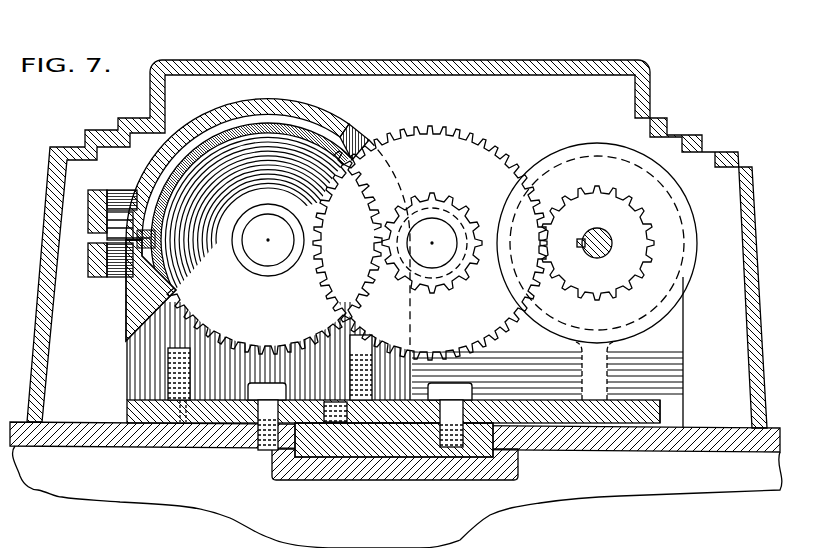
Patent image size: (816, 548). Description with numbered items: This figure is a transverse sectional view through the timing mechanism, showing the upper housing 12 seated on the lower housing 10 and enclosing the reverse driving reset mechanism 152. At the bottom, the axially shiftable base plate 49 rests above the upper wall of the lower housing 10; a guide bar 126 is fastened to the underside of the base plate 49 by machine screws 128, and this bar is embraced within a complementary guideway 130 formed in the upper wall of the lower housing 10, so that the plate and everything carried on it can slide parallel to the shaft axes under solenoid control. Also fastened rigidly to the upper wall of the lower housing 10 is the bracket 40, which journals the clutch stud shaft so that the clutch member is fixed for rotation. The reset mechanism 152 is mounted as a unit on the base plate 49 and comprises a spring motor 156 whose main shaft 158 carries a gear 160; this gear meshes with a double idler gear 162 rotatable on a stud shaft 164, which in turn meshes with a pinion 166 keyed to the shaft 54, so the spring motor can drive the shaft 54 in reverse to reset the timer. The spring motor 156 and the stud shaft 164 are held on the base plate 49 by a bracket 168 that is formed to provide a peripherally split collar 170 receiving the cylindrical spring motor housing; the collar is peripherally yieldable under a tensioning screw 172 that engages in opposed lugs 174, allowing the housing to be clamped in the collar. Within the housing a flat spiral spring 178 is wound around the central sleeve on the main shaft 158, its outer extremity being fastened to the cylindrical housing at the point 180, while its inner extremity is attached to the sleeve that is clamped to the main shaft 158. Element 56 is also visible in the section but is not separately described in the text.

The lower housing 10 is at (731, 448).
The upper housing 12 is at (753, 163).
The bracket 40 is at (657, 365).
The base plate 49 is at (140, 410).
The shaft 54 is at (600, 258).
The wheel 56 is at (647, 197).
The guide bar 126 is at (323, 457).
The machine screws 128 is at (470, 477).
The guideway 130 is at (440, 468).
The reset mechanism 152 is at (388, 106).
The spring motor 156 is at (271, 138).
The main shaft 158 is at (277, 252).
The gear 160 is at (207, 312).
The double idler gear 162 is at (463, 153).
The stud shaft 164 is at (440, 257).
The pinion 166 is at (607, 200).
The bracket 168 is at (137, 368).
The split collar 170 is at (220, 110).
The tensioning screw 172 is at (110, 186).
The lugs 174 is at (87, 252).
The spiral spring 178 is at (240, 135).
The spring fastening 180 is at (130, 283).